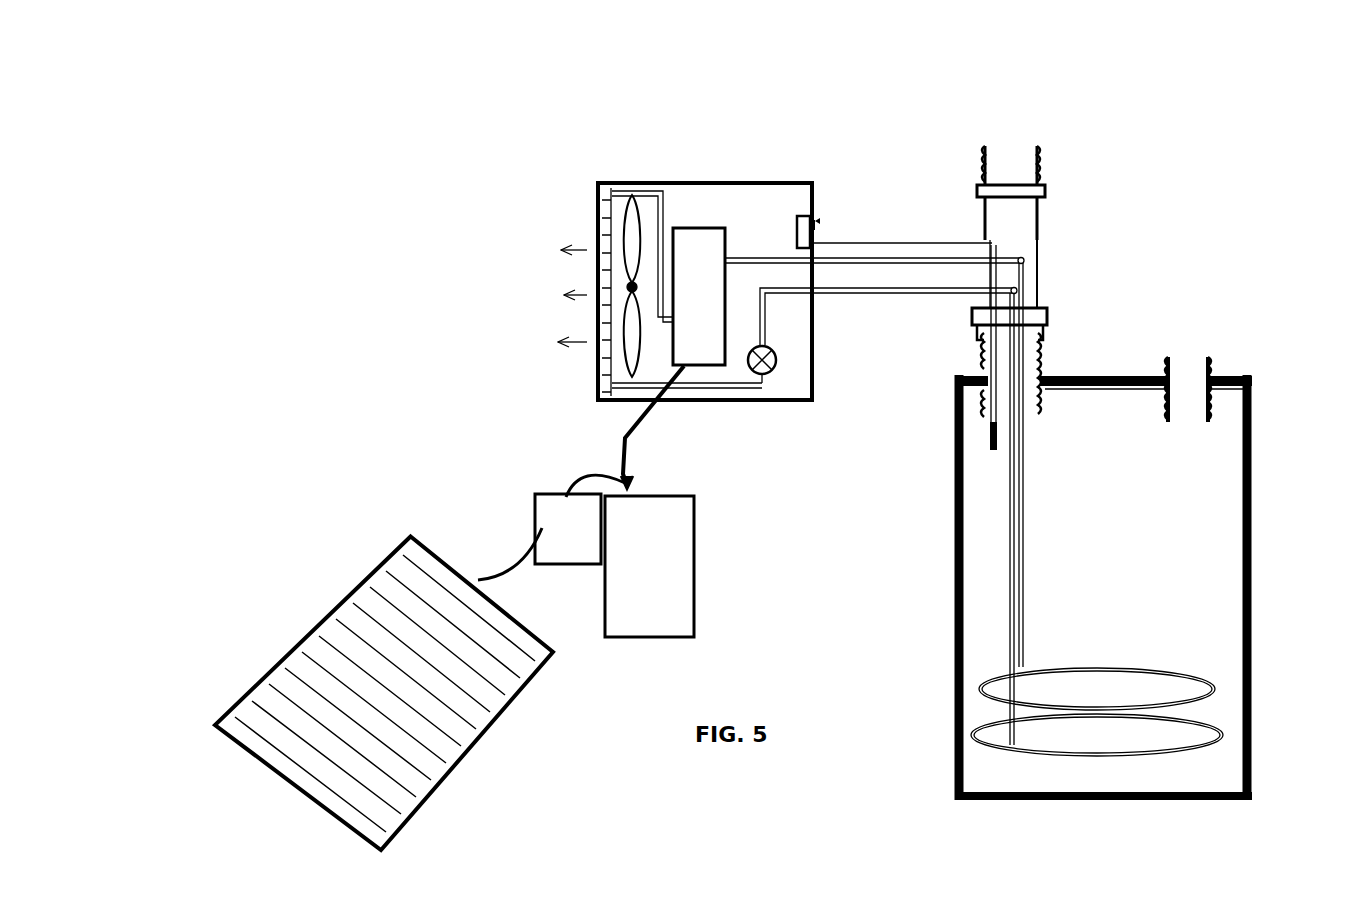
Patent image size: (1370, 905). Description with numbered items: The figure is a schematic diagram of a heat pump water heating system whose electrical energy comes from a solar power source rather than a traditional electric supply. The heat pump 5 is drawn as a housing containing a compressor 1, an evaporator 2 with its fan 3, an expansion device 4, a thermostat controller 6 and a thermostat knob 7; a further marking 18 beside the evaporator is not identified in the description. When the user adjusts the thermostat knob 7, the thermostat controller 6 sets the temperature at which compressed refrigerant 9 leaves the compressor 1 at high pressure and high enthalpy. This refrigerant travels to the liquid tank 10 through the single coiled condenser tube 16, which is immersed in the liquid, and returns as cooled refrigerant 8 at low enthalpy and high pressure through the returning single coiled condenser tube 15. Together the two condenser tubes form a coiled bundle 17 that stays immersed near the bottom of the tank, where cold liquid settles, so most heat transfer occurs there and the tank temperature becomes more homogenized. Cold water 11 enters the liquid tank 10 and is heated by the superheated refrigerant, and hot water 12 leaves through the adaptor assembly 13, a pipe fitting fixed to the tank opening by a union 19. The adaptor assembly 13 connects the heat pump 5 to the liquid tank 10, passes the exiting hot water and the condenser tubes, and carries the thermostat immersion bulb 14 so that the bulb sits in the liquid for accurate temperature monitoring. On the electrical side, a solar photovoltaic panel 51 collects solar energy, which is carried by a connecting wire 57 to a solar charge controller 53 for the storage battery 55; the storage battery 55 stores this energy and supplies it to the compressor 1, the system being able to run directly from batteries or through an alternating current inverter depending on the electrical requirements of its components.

The compressor 1 is at (700, 325).
The evaporator 2 is at (595, 363).
The fan 3 is at (598, 401).
The expansion device 4 is at (774, 380).
The heat pump 5 is at (738, 166).
The thermostat controller 6 is at (806, 211).
The thermostat knob 7 is at (829, 220).
The cooled refrigerant 8 is at (930, 305).
The compressed refrigerant 9 is at (782, 248).
The liquid tank 10 is at (1257, 561).
The water 11 is at (1188, 374).
The hot water 12 is at (1012, 148).
The adaptor assembly 13 is at (1047, 251).
The thermostat immersion bulb 14 is at (987, 444).
The returning single coiled condenser tube 15 is at (1008, 563).
The single coiled condenser tube 16 is at (1027, 607).
The coiled bundle 17 is at (1164, 670).
The air flow 18 is at (558, 296).
The union 19 is at (1054, 351).
The solar photovoltaic panel 51 is at (457, 770).
The solar charge controller 53 is at (562, 569).
The storage battery 55 is at (655, 643).
The connecting wire 57 is at (489, 562).